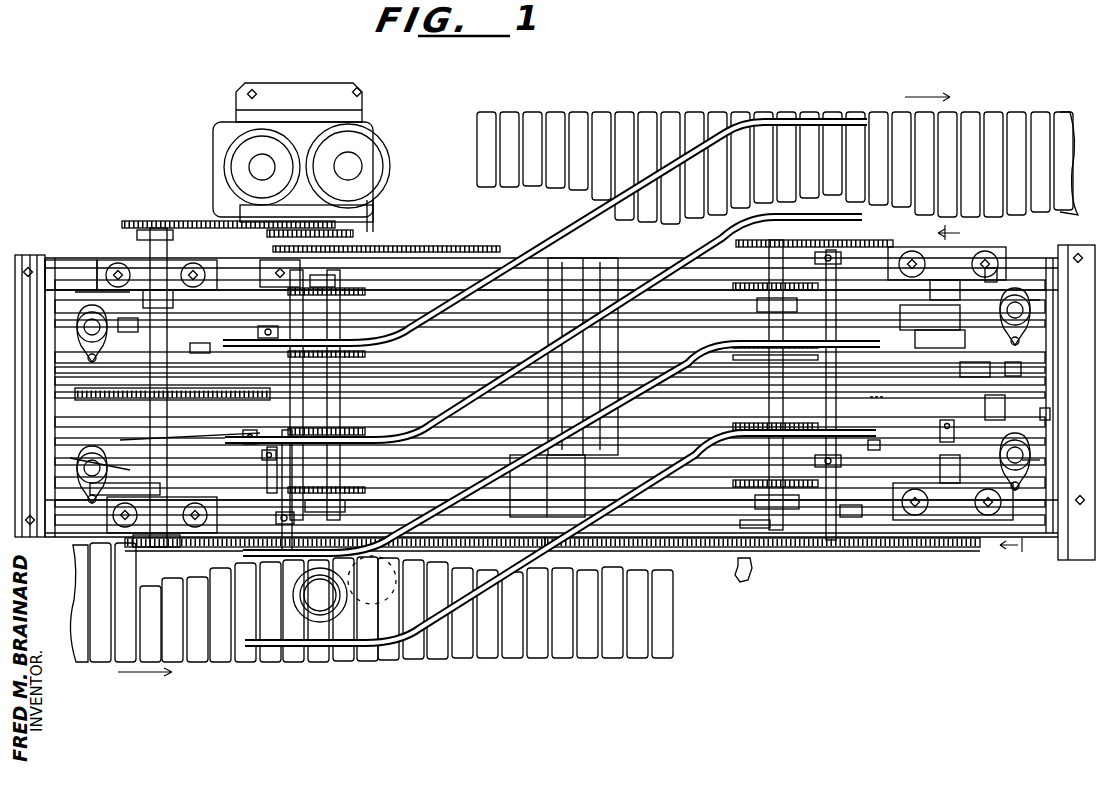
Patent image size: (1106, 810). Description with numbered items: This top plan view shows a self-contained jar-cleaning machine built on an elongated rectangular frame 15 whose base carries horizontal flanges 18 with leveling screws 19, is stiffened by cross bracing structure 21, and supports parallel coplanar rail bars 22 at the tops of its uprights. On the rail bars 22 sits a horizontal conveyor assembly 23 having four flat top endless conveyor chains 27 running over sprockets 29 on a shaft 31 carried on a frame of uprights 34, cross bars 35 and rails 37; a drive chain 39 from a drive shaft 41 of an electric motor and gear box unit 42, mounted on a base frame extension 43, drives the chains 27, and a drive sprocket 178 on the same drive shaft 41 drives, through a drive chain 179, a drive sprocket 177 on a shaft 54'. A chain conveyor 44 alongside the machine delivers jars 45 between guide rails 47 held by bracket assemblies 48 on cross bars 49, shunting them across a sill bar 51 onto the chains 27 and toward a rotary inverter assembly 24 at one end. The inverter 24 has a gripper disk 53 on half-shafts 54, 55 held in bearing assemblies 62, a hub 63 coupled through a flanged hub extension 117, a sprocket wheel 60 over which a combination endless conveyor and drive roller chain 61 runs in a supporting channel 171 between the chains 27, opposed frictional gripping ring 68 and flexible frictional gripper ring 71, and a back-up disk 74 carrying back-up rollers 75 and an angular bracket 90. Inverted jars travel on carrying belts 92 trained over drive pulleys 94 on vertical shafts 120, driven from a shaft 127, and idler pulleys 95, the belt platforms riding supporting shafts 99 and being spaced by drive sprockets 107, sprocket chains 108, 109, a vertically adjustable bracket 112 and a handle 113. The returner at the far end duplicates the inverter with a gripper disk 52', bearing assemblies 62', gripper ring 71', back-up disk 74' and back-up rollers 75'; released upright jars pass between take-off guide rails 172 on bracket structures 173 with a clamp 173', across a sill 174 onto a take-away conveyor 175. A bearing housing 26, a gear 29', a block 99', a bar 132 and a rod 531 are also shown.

The frame 15 is at (69, 247).
The horizontal flanges 18 is at (28, 262).
The leveling screws 19 is at (28, 268).
The cross bracing structure 21 is at (1035, 315).
The rail bars 22 is at (78, 258).
The horizontal conveyor assembly 23 is at (714, 545).
The rotary inverter assembly 24 is at (1055, 352).
The bearing housing 26 is at (84, 332).
The flat top endless conveyor chains 27 is at (604, 300).
The sprockets 29 is at (553, 367).
The gear 29' is at (768, 350).
The shaft 31 is at (770, 373).
The uprights 34 is at (648, 538).
The cross bars 35 is at (688, 262).
The rails 37 is at (478, 350).
The drive chain 39 is at (378, 203).
The drive shaft 41 is at (300, 218).
The electric motor and gear box unit 42 is at (393, 123).
The base frame extension 43 is at (380, 233).
The chain conveyor 44 is at (513, 640).
The jars 45 is at (305, 620).
The guide rails 47 is at (403, 510).
The bracket assemblies 48 is at (850, 517).
The cross bars 49 is at (280, 410).
The sill bar 51 is at (463, 555).
The gripper disk 52' is at (71, 275).
The gripper disk 53 is at (998, 415).
The half-shaft 54 is at (945, 276).
The shaft 54' is at (174, 299).
The half-shaft 55 is at (930, 476).
The sprocket wheel 60 is at (893, 400).
The combination endless conveyor and drive roller chain 61 is at (222, 378).
The bearing assemblies 62 is at (554, 370).
The bearing assemblies 62' is at (178, 515).
The hub 63 is at (930, 345).
The frictional gripping ring 68 is at (1056, 392).
The flexible frictional gripper ring 71 is at (1072, 398).
The gripper ring 71' is at (71, 408).
The back-up disk 74 is at (1071, 432).
The back-up disk 74' is at (82, 474).
The back-up rollers 75 is at (608, 440).
The back-up rollers 75' is at (239, 421).
The angular bracket 90 is at (877, 445).
The carrying belts 92 is at (992, 278).
The drive pulleys 94 is at (1030, 300).
The idler pulleys 95 is at (112, 295).
The supporting shafts 99 is at (990, 368).
The block 99' is at (167, 328).
The drive sprocket 107 is at (165, 553).
The sprocket chain 108 is at (888, 550).
The sprocket chain 109 is at (602, 552).
The vertically adjustable bracket 112 is at (755, 528).
The handle 113 is at (750, 576).
The flanged hub extension 117 is at (915, 318).
The vertical shaft 120 is at (1020, 325).
The shaft 127 is at (1012, 370).
The bar 132 is at (465, 245).
The supporting channel 171 is at (366, 375).
The take-off guide rails 172 is at (797, 215).
The bracket structures 173 is at (259, 422).
The clamp 173' is at (850, 394).
The sill 174 is at (648, 250).
The take-away conveyor 175 is at (657, 132).
The drive sprocket 177 is at (150, 220).
The drive sprocket 178 is at (290, 221).
The drive chain 179 is at (190, 222).
The rod 531 is at (122, 440).